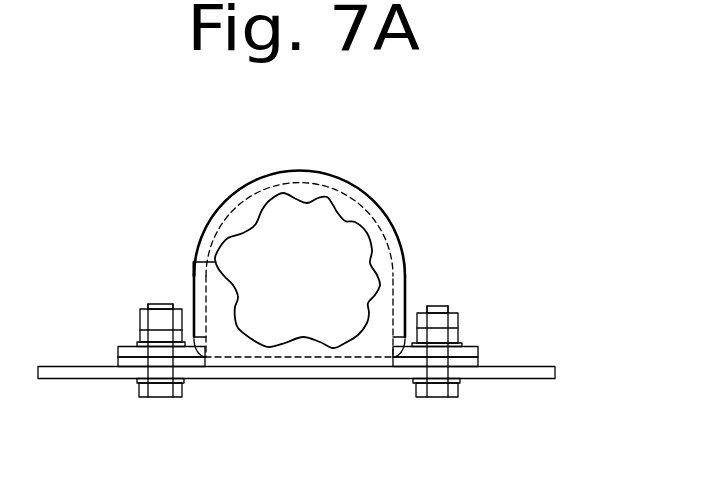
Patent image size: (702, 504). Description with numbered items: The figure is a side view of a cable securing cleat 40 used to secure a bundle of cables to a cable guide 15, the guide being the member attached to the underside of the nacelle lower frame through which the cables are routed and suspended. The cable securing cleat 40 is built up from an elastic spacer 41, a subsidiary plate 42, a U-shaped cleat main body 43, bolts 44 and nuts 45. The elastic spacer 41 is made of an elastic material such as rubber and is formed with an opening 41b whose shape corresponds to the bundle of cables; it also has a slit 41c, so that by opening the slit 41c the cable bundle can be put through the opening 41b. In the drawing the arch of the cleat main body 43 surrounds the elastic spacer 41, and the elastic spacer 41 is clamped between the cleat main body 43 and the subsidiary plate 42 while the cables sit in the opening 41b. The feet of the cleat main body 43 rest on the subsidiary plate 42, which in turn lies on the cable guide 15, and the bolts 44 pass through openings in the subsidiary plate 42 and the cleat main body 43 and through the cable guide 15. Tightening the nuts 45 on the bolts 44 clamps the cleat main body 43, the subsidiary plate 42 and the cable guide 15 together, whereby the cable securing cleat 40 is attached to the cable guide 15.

The cable securing cleat 40 is at (87, 165).
The elastic spacer 41 is at (250, 208).
The opening 41b is at (302, 208).
The slit 41c is at (210, 250).
The subsidiary plate 42 is at (475, 363).
The U-shaped cleat main body 43 is at (470, 347).
The bolts 44 is at (162, 398).
The nuts 45 is at (142, 322).
The cable guide 15 is at (510, 380).